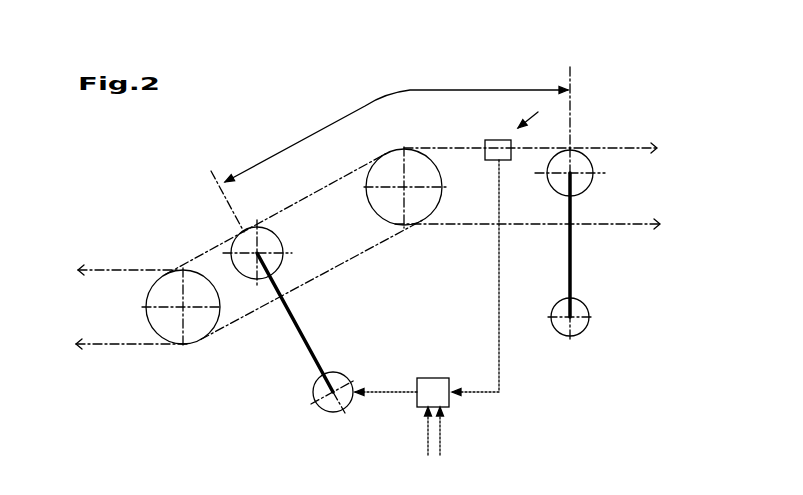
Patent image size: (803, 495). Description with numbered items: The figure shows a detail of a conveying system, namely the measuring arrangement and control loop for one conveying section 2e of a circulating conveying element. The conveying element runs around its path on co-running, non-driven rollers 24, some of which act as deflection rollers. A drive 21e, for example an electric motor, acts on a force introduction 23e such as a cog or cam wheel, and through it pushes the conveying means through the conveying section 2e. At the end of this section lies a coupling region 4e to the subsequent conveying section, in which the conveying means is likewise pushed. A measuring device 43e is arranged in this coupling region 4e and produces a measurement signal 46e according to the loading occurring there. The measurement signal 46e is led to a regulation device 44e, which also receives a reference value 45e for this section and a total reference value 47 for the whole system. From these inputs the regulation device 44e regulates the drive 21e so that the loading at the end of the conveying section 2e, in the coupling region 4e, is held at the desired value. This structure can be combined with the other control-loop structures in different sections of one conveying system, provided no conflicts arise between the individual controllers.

The conveying section 2e is at (362, 107).
The non-driven roller 24 is at (193, 336).
The force introduction 23e is at (277, 245).
The drive 21e is at (340, 375).
The measuring device 43e is at (497, 148).
The coupling region 4e is at (541, 115).
The measurement signal 46e is at (497, 282).
The regulation device 44e is at (430, 382).
The reference value 45e is at (427, 437).
The total reference value 47 is at (440, 435).